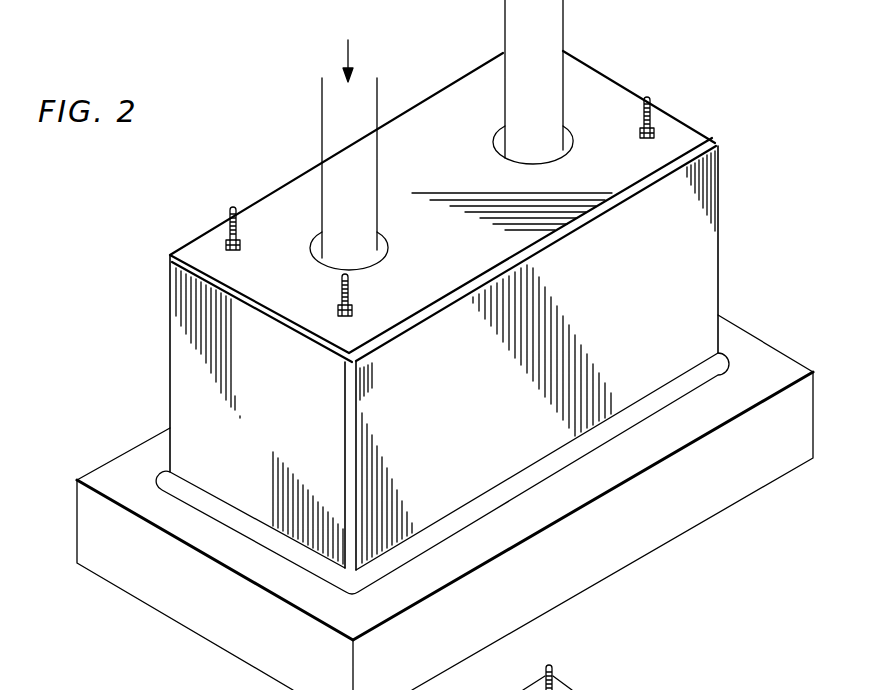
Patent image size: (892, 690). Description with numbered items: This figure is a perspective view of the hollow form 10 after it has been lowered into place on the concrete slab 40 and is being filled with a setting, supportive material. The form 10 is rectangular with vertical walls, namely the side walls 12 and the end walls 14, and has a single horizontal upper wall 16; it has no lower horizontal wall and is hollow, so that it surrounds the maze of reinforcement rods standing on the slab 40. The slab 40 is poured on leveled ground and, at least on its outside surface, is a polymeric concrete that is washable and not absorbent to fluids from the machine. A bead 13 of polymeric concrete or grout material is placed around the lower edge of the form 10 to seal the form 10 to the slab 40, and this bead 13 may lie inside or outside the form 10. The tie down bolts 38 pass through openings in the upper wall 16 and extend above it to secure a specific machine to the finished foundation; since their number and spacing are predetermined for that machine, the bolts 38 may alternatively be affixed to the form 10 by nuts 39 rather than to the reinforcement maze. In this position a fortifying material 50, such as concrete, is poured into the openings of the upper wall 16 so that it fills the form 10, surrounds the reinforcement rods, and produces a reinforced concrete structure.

The hollow form 10 is at (735, 243).
The side walls 12 is at (652, 356).
The bead 13 is at (475, 504).
The end walls 14 is at (188, 384).
The upper wall 16 is at (456, 257).
The tie down bolts 38 is at (652, 104).
The nuts 39 is at (640, 131).
The concrete slab 40 is at (757, 473).
The fortifying material 50 is at (368, 97).